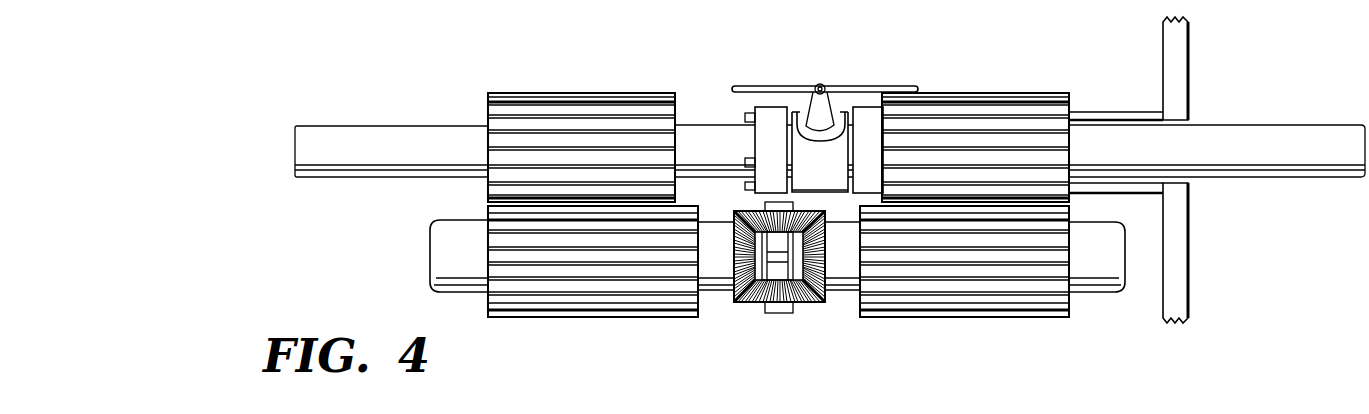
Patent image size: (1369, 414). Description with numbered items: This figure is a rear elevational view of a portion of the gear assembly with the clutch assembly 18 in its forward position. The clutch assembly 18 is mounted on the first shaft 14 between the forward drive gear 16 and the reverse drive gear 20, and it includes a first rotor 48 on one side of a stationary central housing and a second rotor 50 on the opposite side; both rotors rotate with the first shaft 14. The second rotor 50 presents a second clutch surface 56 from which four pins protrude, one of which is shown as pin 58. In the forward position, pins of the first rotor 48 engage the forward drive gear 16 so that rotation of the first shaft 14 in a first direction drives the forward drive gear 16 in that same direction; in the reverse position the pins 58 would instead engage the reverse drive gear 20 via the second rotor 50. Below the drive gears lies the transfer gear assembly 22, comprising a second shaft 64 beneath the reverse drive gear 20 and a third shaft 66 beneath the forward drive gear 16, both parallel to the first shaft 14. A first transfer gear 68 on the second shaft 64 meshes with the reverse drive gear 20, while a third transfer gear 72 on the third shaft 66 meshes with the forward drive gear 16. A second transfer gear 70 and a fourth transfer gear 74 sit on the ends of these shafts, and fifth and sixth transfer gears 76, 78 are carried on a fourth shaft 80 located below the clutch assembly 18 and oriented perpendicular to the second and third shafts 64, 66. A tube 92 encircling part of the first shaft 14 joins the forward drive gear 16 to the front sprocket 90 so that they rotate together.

The first shaft 14 is at (1279, 135).
The forward drive gear 16 is at (976, 93).
The clutch assembly 18 is at (821, 78).
The reverse drive gear 20 is at (571, 93).
The transfer gear assembly 22 is at (782, 261).
The first rotor 48 is at (870, 116).
The second rotor 50 is at (773, 116).
The second clutch surface 56 is at (752, 150).
The pin 58 is at (748, 116).
The second shaft 64 is at (430, 250).
The third shaft 66 is at (1100, 293).
The first transfer gear 68 is at (581, 317).
The second transfer gear 70 is at (737, 287).
The third transfer gear 72 is at (994, 317).
The fourth transfer gear 74 is at (824, 276).
The fifth transfer gear 76 is at (745, 212).
The sixth transfer gear 78 is at (808, 303).
The fourth shaft 80 is at (781, 314).
The front sprocket 90 is at (1178, 42).
The tube 92 is at (1110, 112).